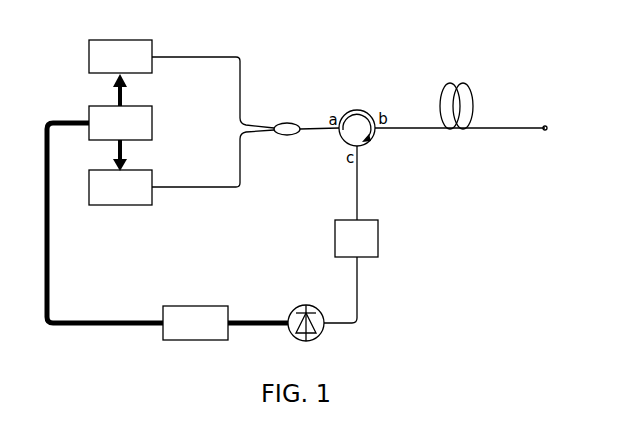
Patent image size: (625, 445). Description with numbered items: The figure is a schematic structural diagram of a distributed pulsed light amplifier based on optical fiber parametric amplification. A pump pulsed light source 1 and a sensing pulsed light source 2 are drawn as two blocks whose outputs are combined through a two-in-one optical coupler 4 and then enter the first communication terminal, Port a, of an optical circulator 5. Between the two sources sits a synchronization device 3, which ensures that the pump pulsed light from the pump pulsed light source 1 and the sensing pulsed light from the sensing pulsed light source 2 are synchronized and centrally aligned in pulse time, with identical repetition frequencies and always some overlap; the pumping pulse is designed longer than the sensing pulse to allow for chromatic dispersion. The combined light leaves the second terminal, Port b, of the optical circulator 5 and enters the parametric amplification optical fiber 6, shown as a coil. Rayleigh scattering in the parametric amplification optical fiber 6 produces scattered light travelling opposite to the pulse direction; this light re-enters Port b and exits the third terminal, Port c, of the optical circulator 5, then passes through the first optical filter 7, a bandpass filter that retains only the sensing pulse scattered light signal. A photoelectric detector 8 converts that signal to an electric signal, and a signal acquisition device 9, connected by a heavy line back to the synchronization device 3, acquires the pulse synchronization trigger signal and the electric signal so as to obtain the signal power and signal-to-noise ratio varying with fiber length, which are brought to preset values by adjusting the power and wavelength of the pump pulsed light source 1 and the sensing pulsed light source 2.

The pump pulsed light source 1 is at (89, 40).
The sensing pulsed light source 2 is at (89, 205).
The synchronization device 3 is at (152, 140).
The two-in-one optical coupler 4 is at (281, 124).
The optical circulator 5 is at (354, 110).
The parametric amplification optical fiber 6 is at (441, 100).
The first optical filter 7 is at (335, 220).
The photoelectric detector 8 is at (292, 307).
The signal acquisition device 9 is at (165, 305).